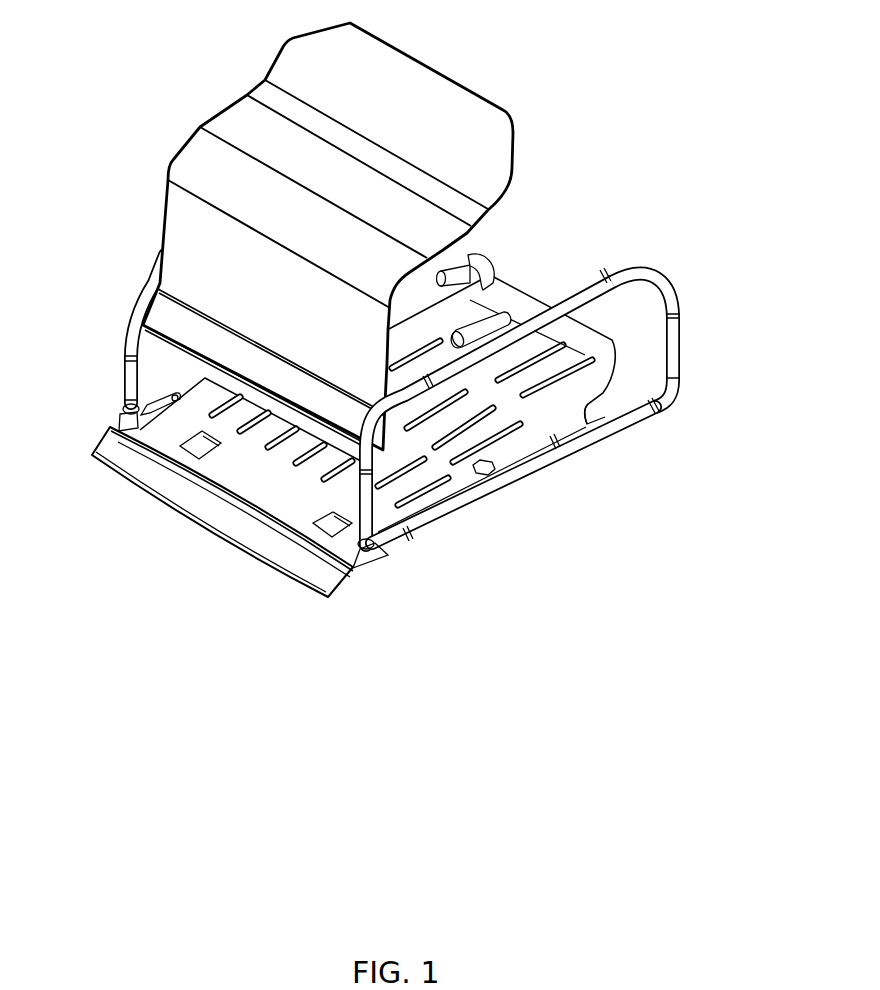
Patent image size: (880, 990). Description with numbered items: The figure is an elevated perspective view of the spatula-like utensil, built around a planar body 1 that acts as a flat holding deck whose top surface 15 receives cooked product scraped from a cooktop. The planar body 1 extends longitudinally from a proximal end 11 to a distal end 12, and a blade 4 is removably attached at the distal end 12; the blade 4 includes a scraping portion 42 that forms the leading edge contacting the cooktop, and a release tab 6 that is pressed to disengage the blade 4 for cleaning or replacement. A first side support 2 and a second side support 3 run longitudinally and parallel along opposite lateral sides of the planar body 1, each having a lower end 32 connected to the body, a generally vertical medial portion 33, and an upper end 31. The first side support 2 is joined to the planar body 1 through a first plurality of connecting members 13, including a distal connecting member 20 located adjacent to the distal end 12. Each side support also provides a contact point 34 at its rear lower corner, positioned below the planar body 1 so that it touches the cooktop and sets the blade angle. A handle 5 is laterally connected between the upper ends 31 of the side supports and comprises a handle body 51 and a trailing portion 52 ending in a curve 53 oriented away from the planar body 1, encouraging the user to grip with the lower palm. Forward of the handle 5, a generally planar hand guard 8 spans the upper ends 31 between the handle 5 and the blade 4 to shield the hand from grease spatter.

The planar body 1 is at (394, 414).
The first side support 2 is at (555, 393).
The second side support 3 is at (114, 343).
The blade 4 is at (203, 520).
The handle 5 is at (484, 277).
The release tab 6 is at (122, 417).
The hand guard 8 is at (188, 151).
The proximal end 11 is at (612, 332).
The distal end 12 is at (268, 492).
The first plurality of connecting members 13 is at (609, 407).
The top surface 15 is at (561, 430).
The distal connecting member 20 is at (172, 398).
The upper end 31 is at (569, 283).
The lower end 32 is at (528, 498).
The medial portion 33 is at (683, 345).
The contact point 34 is at (676, 404).
The scraping portion 42 is at (257, 535).
The handle body 51 is at (433, 294).
The trailing portion 52 is at (487, 282).
The curve 53 is at (476, 258).